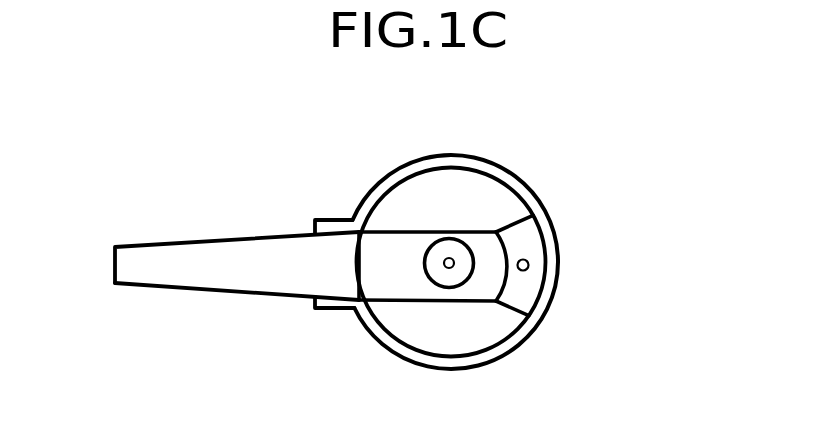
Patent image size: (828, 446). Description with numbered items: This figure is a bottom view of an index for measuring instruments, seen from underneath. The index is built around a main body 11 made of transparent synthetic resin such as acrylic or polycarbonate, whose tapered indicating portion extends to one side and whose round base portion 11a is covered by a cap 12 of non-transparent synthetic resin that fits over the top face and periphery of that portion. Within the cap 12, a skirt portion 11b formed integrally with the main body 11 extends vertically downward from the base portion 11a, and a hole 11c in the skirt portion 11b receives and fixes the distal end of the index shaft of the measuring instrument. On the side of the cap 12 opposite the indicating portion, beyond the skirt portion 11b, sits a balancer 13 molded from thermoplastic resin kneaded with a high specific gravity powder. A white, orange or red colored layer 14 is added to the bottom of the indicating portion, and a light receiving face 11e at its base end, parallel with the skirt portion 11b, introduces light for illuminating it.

The main body 11 is at (153, 284).
The base portion 11a is at (407, 247).
The skirt portion 11b is at (437, 278).
The hole 11c is at (458, 268).
The light receiving face 11e is at (360, 263).
The cap 12 is at (552, 281).
The balancer 13 is at (530, 233).
The colored layer 14 is at (235, 270).